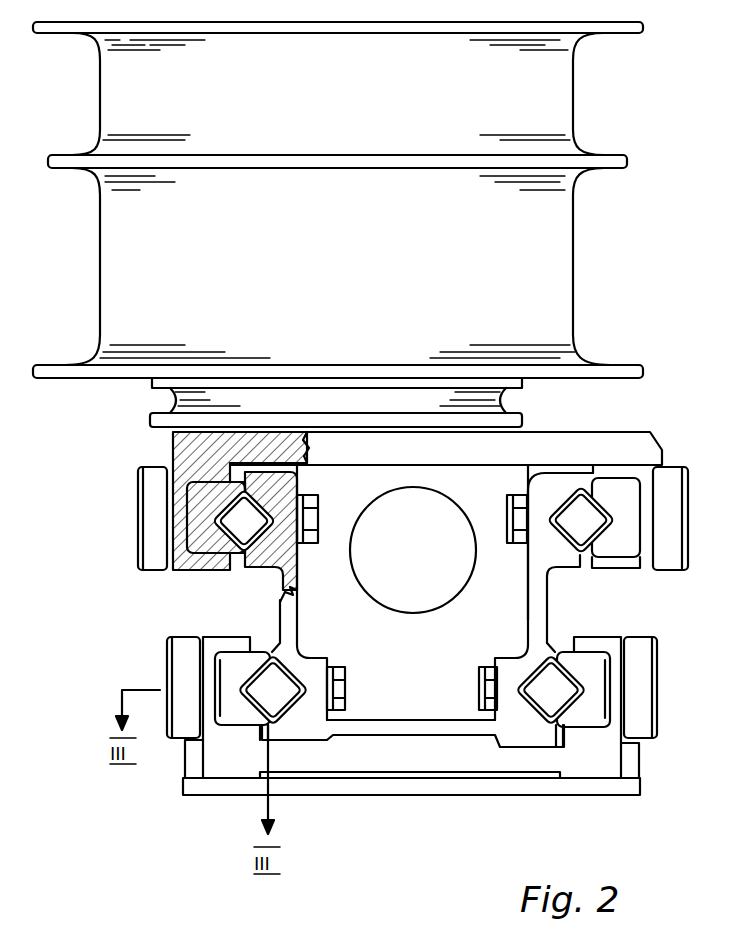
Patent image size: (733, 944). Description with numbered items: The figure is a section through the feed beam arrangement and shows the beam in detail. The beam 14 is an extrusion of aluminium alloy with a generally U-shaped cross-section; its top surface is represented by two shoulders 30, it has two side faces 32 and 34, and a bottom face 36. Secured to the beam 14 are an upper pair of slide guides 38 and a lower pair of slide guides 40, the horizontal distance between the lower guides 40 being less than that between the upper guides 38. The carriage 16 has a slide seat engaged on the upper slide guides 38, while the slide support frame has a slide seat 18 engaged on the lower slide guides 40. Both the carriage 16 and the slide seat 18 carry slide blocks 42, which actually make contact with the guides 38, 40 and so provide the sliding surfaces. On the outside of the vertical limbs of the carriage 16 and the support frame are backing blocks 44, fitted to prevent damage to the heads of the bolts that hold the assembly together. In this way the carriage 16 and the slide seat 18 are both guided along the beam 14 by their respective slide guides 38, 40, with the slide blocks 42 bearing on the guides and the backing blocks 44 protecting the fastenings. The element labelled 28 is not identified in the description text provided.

The beam 14 is at (537, 592).
The carriage 16 is at (640, 445).
The slide seat 18 is at (608, 762).
The spool 28 is at (590, 242).
The shoulders 30 is at (567, 473).
The side face 32 is at (280, 603).
The side face 34 is at (565, 618).
The bottom face 36 is at (410, 742).
The upper pair of slide guides 38 is at (242, 502).
The lower pair of slide guides 40 is at (267, 698).
The slide blocks 42 is at (195, 538).
The backing blocks 44 is at (150, 500).